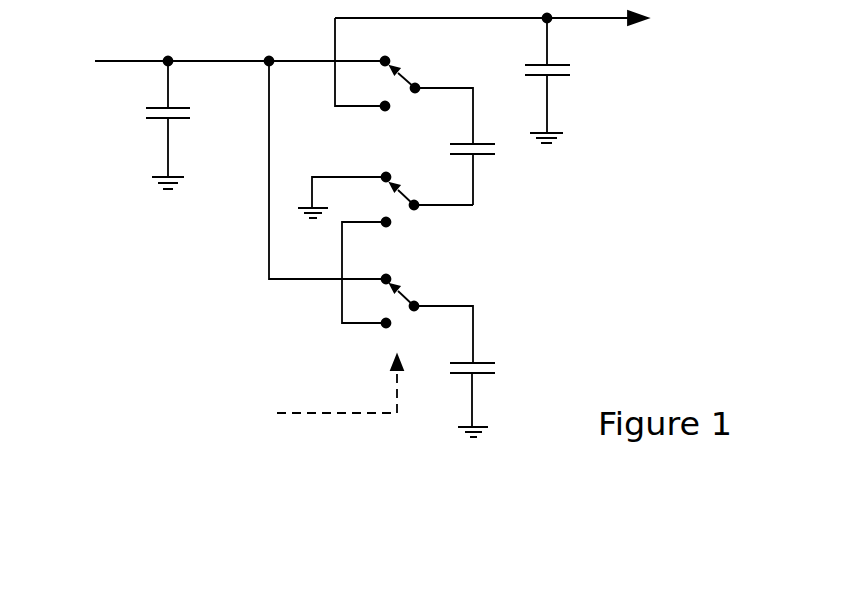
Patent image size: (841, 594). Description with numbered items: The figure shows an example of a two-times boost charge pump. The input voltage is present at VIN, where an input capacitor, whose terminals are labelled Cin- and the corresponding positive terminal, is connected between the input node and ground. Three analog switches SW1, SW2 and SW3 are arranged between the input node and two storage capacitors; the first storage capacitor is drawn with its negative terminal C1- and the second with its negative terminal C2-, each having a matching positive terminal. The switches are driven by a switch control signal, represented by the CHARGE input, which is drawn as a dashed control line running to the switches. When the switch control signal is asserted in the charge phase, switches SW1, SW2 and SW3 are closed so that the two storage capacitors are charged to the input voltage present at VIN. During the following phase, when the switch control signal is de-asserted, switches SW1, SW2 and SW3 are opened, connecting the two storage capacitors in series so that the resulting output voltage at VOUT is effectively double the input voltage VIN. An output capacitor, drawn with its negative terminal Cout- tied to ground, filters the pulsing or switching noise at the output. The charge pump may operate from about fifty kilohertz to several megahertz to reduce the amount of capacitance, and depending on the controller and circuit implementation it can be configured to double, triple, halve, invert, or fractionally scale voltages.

The input voltage VIN is at (112, 60).
The output voltage VOUT is at (627, 19).
The input capacitor negative terminal Cin- is at (178, 153).
The output capacitor negative terminal Cout- is at (563, 109).
The analog switch SW1 is at (427, 101).
The analog switch SW2 is at (385, 248).
The analog switch SW3 is at (428, 319).
The first flying capacitor negative terminal C1- is at (482, 179).
The second flying capacitor negative terminal C2- is at (481, 405).
The charge / transfer control signal CHARGE is at (265, 400).